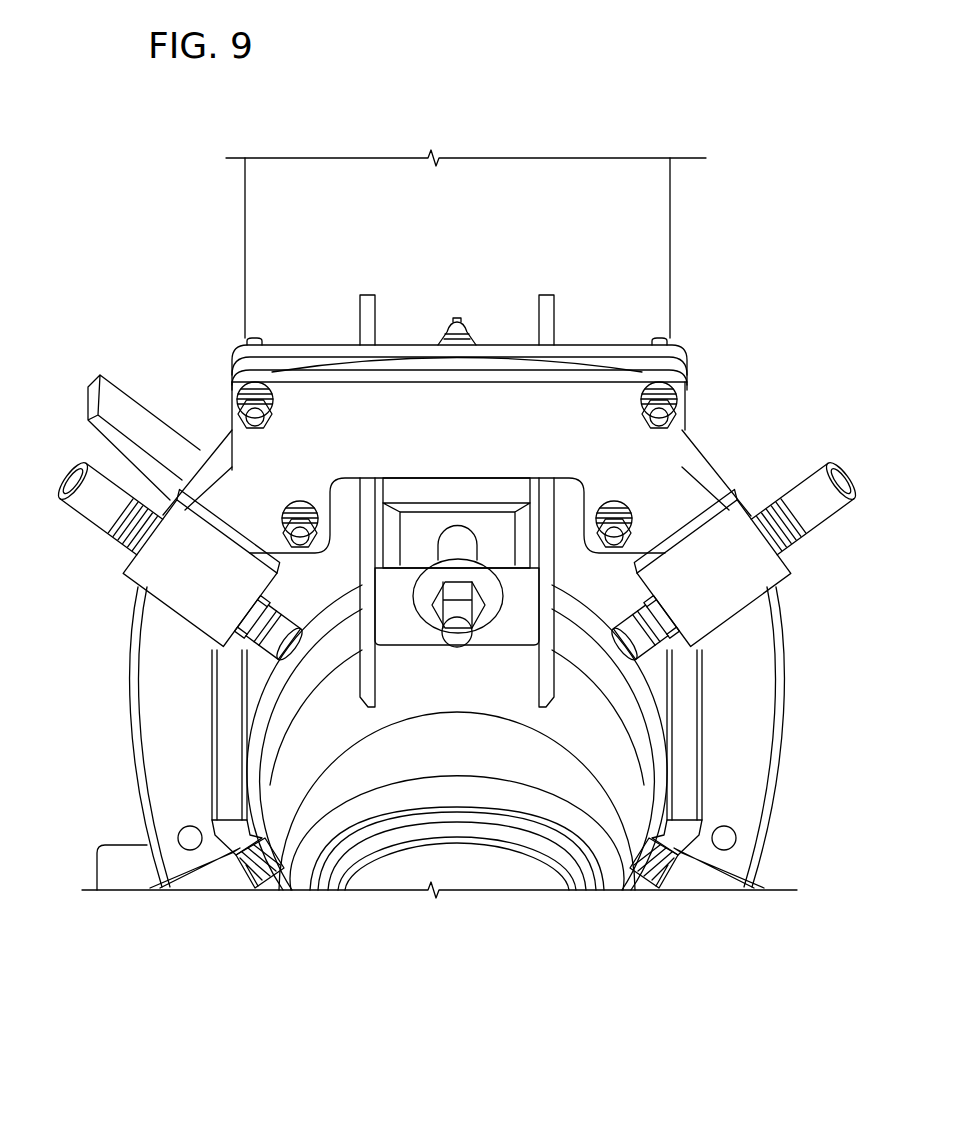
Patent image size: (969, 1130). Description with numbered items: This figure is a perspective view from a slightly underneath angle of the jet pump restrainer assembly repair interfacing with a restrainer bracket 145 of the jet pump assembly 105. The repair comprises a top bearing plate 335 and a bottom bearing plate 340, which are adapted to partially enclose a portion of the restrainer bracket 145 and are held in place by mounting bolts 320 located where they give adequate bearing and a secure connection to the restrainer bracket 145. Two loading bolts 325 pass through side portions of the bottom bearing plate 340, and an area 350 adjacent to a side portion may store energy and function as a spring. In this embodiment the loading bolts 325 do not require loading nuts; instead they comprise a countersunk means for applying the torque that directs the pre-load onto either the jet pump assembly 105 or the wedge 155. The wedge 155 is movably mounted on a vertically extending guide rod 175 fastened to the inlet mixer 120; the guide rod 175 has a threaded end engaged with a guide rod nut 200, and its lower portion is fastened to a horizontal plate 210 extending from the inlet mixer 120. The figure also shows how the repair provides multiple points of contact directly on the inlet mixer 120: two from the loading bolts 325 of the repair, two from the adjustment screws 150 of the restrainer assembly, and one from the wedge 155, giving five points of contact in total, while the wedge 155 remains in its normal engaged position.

The jet pump assembly 105 is at (453, 215).
The inlet mixer 120 is at (453, 263).
The restrainer bracket 145 is at (782, 690).
The adjustment screws 150 is at (258, 890).
The wedge 155 is at (470, 503).
The guide rod 175 is at (450, 645).
The guide rod nut 200 is at (462, 322).
The horizontal plate 210 is at (362, 684).
The mounting bolts 320 is at (284, 522).
The loading bolts 325 is at (840, 468).
The top bearing plate 335 is at (593, 343).
The bottom bearing plate 340 is at (419, 443).
The area adjacent to side portion 350 is at (254, 531).